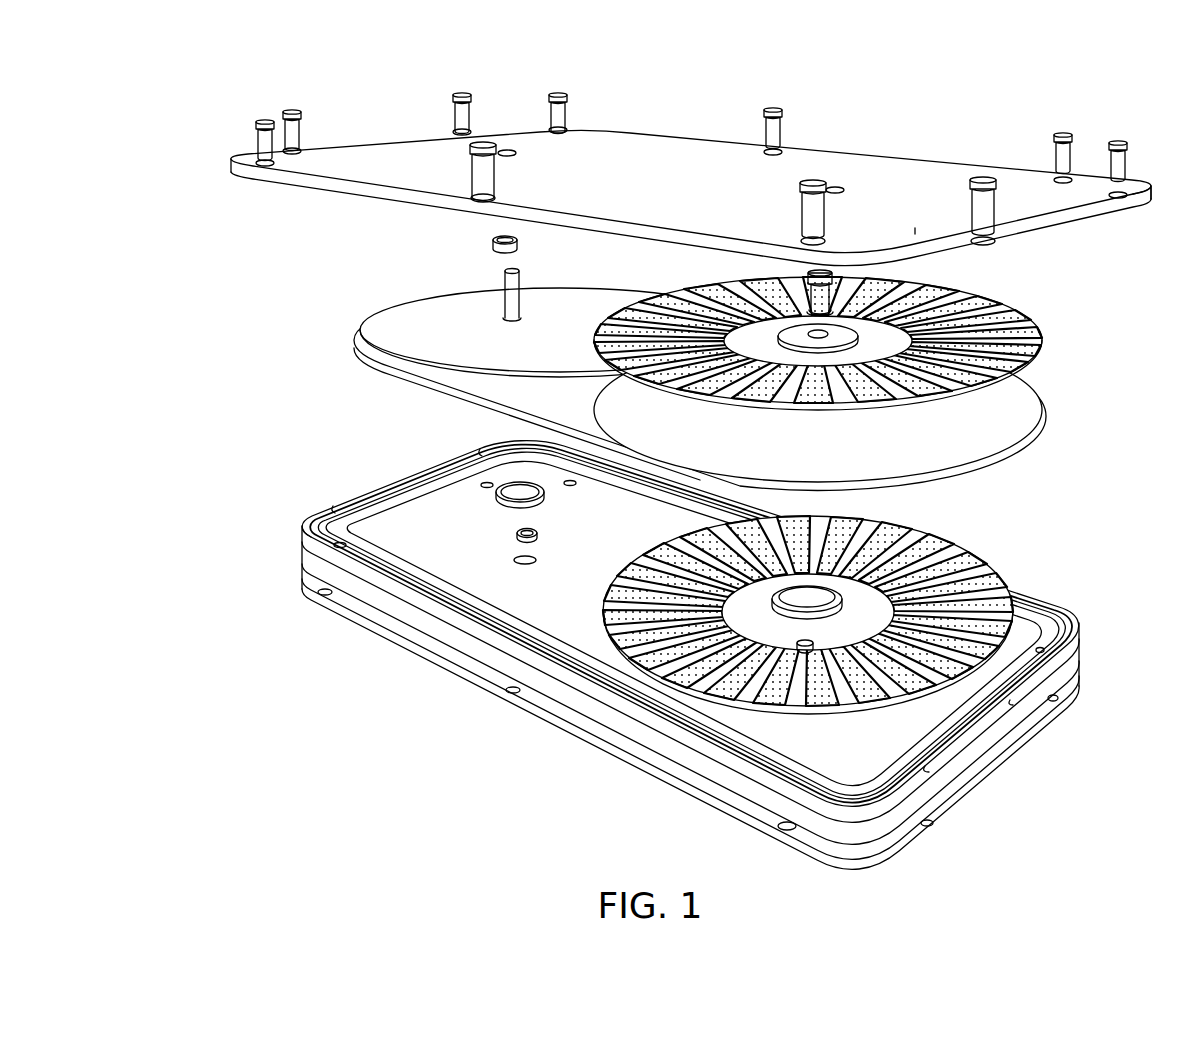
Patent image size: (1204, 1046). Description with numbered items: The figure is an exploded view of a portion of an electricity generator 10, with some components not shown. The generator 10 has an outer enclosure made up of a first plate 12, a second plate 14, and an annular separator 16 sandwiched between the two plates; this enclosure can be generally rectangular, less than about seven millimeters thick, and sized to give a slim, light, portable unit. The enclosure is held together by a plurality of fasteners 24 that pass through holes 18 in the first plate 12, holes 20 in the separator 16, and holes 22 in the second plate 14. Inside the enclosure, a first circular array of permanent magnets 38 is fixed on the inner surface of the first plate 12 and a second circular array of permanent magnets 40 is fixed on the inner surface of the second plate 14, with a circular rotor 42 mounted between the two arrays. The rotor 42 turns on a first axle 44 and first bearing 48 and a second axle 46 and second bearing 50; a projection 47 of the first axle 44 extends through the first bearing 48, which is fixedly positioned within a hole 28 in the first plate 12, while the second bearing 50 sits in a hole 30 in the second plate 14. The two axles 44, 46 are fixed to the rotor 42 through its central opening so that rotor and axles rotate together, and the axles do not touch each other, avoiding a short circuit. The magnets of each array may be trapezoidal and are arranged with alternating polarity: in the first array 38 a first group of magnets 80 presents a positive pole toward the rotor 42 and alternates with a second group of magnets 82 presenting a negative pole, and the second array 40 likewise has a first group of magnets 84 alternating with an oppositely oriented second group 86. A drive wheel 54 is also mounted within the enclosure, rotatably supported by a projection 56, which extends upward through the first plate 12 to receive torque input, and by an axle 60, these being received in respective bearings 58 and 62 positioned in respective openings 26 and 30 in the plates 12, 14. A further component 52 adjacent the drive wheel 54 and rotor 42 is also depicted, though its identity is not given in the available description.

The generator 10 is at (685, 465).
The first plate 12 is at (413, 147).
The second plate 14 is at (385, 630).
The annular separator 16 is at (288, 530).
The holes 18 is at (1142, 192).
The holes 20 is at (332, 510).
The holes 22 is at (510, 690).
The fasteners 24 is at (988, 208).
The opening 26 is at (514, 157).
The hole 28 is at (840, 194).
The hole 30 is at (525, 570).
The first circular array of permanent magnets 38 is at (823, 347).
The second circular array of permanent magnets 40 is at (817, 632).
The rotor 42 is at (995, 428).
The first axle 44 is at (690, 290).
The second axle 46 is at (793, 600).
The projection 47 is at (796, 332).
The first bearing 48 is at (795, 284).
The second bearing 50 is at (818, 642).
The tray 52 is at (466, 380).
The drive wheel 54 is at (403, 313).
The projection 56 is at (510, 282).
The bearing 58 is at (498, 243).
The axle 60 is at (505, 500).
The bearing 62 is at (545, 536).
The first group of magnets 80 is at (845, 398).
The second group of magnets 82 is at (882, 400).
The first group of magnets 84 is at (783, 705).
The second group of magnets 86 is at (812, 705).